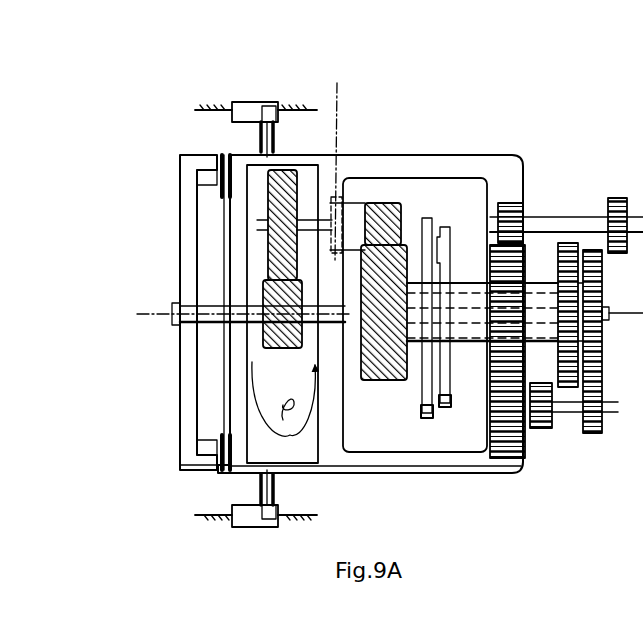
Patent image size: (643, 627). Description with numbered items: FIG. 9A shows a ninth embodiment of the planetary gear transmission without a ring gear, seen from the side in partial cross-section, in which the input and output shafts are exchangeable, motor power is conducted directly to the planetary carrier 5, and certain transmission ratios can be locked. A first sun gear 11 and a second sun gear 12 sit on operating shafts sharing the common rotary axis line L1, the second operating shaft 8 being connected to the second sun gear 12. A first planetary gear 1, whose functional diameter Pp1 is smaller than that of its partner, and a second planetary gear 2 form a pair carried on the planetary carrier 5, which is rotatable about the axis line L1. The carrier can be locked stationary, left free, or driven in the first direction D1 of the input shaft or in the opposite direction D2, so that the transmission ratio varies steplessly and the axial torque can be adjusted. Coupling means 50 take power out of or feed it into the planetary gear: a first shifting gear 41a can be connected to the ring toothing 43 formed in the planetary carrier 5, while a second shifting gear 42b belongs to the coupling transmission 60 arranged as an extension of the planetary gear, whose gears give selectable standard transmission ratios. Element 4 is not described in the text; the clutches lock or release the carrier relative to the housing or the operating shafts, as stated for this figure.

The first planetary gear 1 is at (378, 205).
The second planetary gear 2 is at (268, 262).
The planetary carrier 5 is at (455, 165).
The first sun gear 11 is at (378, 378).
The second sun gear 12 is at (250, 335).
The rotary axis line L1 is at (167, 318).
The functional diameter of the first planetary gears Pp1 is at (303, 220).
The first direction of rotation D1 is at (265, 453).
The second direction of rotation D2 is at (283, 399).
The first shifting gear 41a is at (487, 222).
The second shifting gear 42b is at (590, 430).
The first ring toothing 43 is at (502, 402).
The coupling means 50 is at (532, 196).
The coupling transmission 60 is at (619, 182).
The second operating shaft 8 is at (637, 442).
The element 4 is at (639, 510).